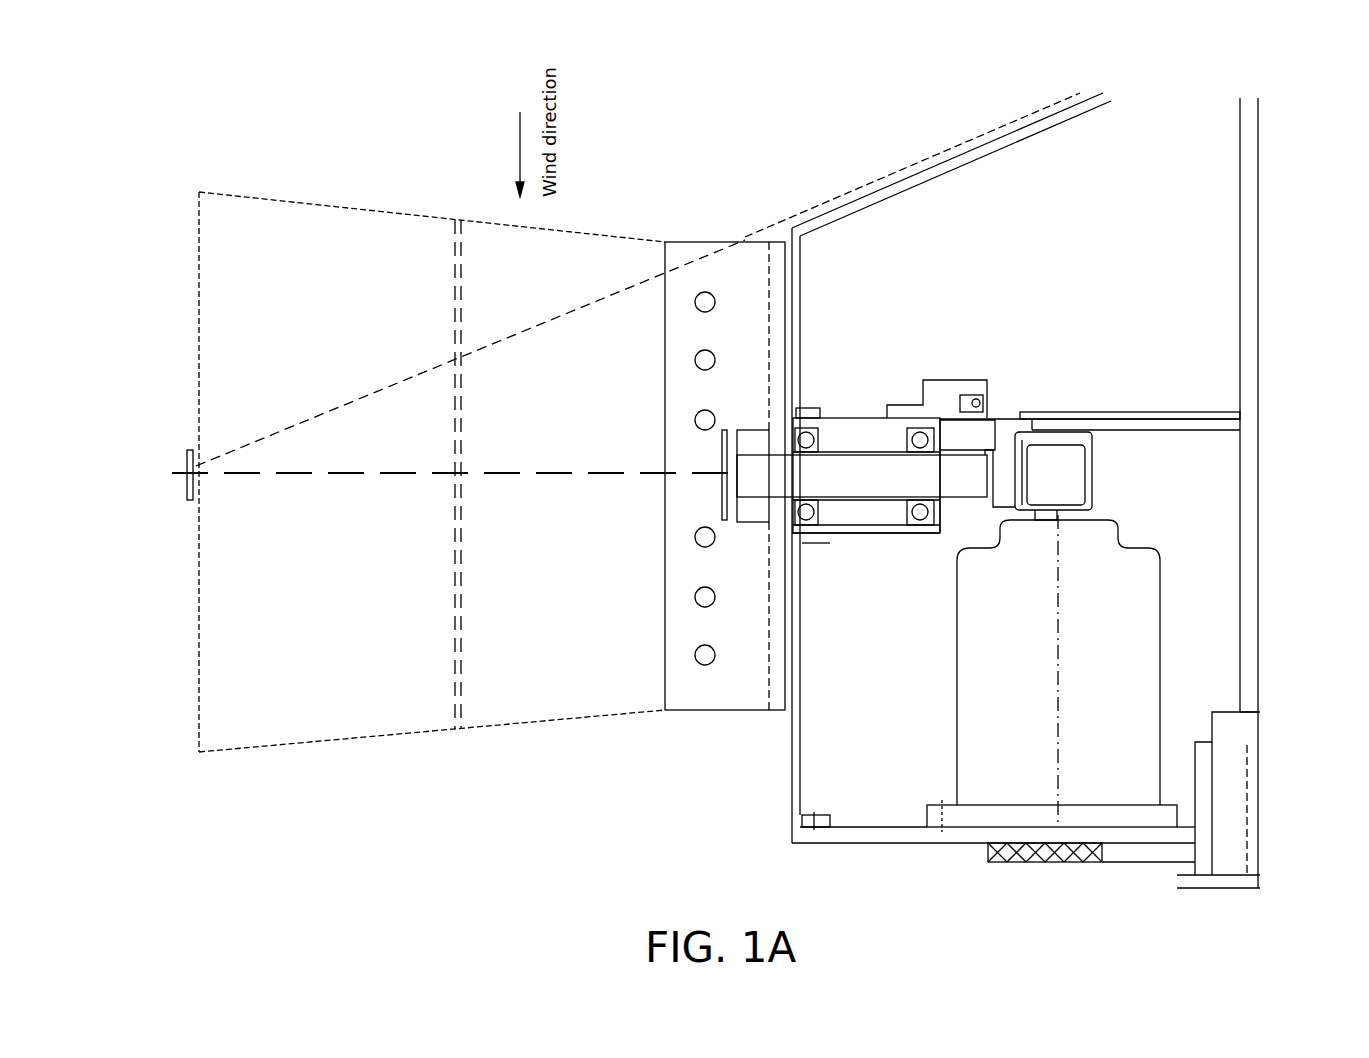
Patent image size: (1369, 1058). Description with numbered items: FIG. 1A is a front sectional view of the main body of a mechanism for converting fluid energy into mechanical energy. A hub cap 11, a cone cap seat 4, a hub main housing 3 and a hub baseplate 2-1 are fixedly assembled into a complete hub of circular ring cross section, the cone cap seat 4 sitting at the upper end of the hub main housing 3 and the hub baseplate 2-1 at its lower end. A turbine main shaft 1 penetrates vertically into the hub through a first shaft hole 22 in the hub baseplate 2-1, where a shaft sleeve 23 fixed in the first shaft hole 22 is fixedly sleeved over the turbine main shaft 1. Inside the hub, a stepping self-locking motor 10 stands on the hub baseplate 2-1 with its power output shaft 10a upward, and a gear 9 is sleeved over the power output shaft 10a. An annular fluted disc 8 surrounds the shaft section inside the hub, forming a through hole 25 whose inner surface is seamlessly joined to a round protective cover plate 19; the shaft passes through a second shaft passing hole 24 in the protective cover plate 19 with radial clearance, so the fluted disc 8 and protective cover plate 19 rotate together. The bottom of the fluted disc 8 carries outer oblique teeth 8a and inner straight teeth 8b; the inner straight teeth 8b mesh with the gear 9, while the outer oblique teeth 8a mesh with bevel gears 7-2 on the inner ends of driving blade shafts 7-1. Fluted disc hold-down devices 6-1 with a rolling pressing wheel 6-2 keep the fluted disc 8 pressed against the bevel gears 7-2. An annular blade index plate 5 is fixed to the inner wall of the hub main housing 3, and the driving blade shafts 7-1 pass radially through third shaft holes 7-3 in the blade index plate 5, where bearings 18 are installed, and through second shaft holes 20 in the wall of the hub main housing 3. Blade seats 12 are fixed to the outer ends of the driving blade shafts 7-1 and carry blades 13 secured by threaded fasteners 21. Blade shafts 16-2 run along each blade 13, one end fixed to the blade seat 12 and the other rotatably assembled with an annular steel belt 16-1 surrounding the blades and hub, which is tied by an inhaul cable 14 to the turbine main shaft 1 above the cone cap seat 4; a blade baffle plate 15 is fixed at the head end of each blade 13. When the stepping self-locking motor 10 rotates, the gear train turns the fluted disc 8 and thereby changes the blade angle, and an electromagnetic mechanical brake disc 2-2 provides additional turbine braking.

The turbine main shaft 1 is at (1224, 688).
The hub baseplate 2-1 is at (1027, 845).
The electromagnetic mechanical brake disc 2-2 is at (1085, 852).
The hub main housing 3 is at (1025, 493).
The cone cap seat 4 is at (798, 400).
The blade index plate 5 is at (828, 427).
The fluted disc hold-down devices 6-1 is at (968, 392).
The rolling pressing wheel 6-2 is at (983, 400).
The driving blade shafts 7-1 is at (847, 467).
The bevel gears 7-2 is at (955, 505).
The third shaft holes 7-3 is at (850, 492).
The fluted disc 8 is at (1022, 452).
The outer oblique teeth 8a is at (975, 438).
The inner straight teeth 8b is at (1060, 437).
The gear 9 is at (1140, 425).
The stepping self-locking motor 10 is at (1070, 535).
The power output shaft 10a is at (1060, 505).
The hub cap 11 is at (928, 173).
The blade seats 12 is at (691, 476).
The blades 13 is at (432, 486).
The inhaul cable 14 is at (470, 329).
The blade baffle plate 15 is at (233, 472).
The annular steel belt 16-1 is at (232, 486).
The blade shafts 16-2 is at (454, 497).
The bearings 18 is at (918, 527).
The protective cover plate 19 is at (1160, 425).
The second shaft holes 20 is at (746, 603).
The threaded fasteners 21 is at (703, 658).
The first shaft hole 22 is at (1195, 845).
The shaft sleeve 23 is at (1190, 795).
The second shaft passing hole 24 is at (1245, 418).
The through hole 25 is at (1085, 440).